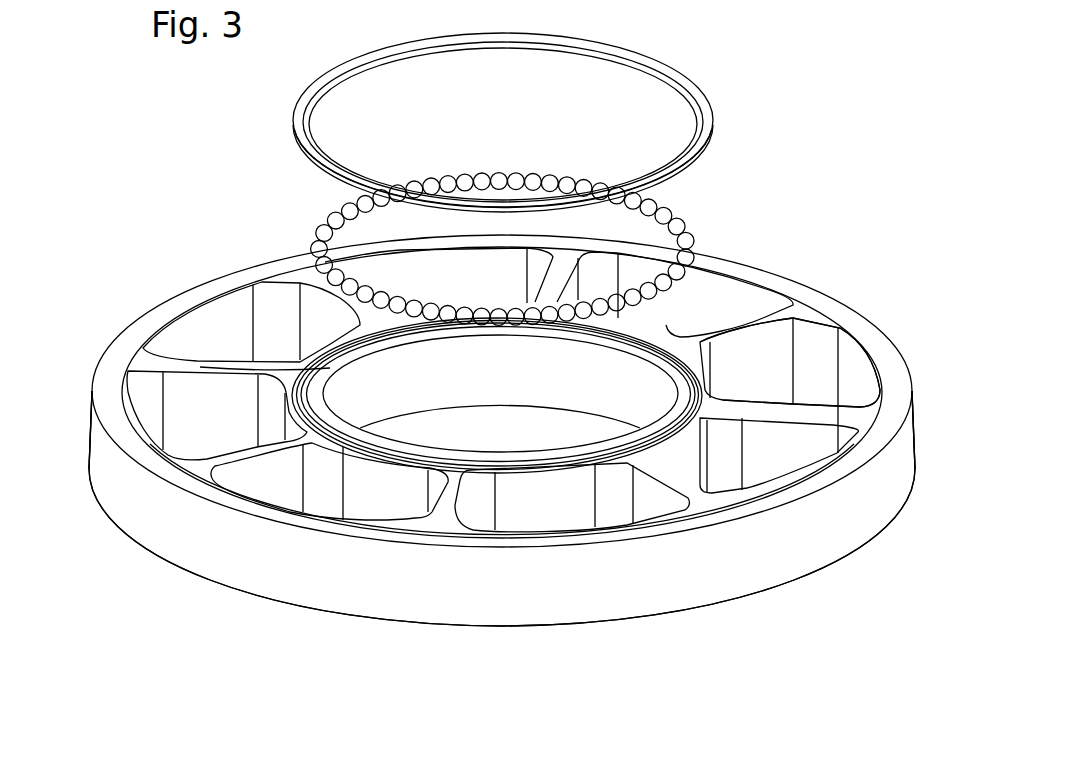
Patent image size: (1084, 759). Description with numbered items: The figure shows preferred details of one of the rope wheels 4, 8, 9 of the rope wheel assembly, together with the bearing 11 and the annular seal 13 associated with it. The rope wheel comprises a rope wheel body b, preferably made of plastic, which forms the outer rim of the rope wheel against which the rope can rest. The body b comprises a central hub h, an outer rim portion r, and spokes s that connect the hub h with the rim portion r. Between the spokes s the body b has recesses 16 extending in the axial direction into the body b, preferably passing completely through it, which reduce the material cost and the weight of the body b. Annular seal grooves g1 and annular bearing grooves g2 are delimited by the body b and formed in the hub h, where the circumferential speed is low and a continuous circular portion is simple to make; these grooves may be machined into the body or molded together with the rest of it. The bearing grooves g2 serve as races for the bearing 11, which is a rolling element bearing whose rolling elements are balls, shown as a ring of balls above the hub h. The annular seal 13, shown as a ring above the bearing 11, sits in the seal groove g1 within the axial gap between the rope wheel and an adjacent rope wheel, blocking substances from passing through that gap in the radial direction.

The rope wheel 4 is at (150, 276).
The rope wheel 8 is at (90, 430).
The rope wheel 9 is at (913, 430).
The rope wheel body b is at (128, 330).
The rim portion r is at (115, 396).
The hub h is at (313, 327).
The recesses 16 is at (807, 367).
The spokes s is at (805, 410).
The annular seal groove g1 is at (705, 397).
The annular bearing groove g2 is at (687, 400).
The bearing 11 is at (693, 242).
The annular seal 13 is at (697, 91).